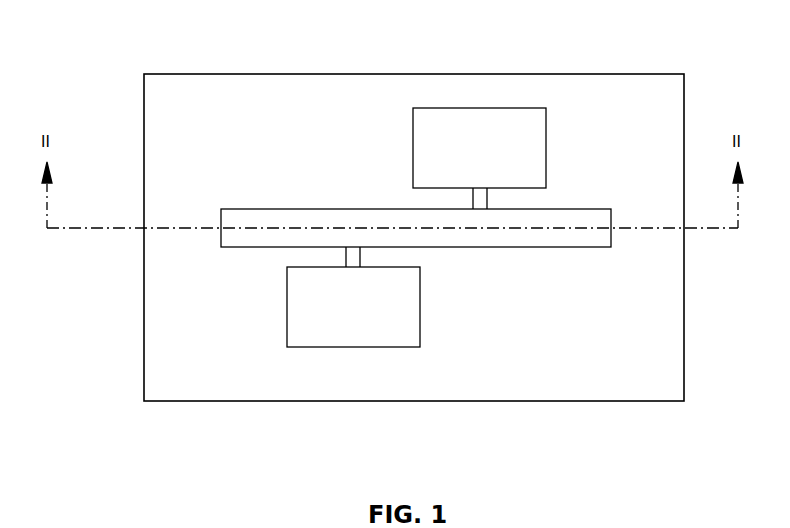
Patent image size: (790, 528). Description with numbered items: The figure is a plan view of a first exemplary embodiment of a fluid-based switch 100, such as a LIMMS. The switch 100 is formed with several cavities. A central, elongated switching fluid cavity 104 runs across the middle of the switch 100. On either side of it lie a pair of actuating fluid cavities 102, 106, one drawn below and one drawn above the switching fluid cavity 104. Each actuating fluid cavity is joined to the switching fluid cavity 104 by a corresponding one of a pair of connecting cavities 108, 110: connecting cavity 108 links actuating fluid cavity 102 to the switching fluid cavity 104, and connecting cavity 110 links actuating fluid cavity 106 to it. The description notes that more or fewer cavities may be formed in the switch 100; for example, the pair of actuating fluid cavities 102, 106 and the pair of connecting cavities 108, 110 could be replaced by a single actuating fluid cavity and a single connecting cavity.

The switch 100 is at (661, 381).
The actuating fluid cavity 102 is at (410, 339).
The switching fluid cavity 104 is at (572, 198).
The actuating fluid cavity 106 is at (535, 178).
The connecting cavity 108 is at (348, 256).
The connecting cavity 110 is at (472, 189).